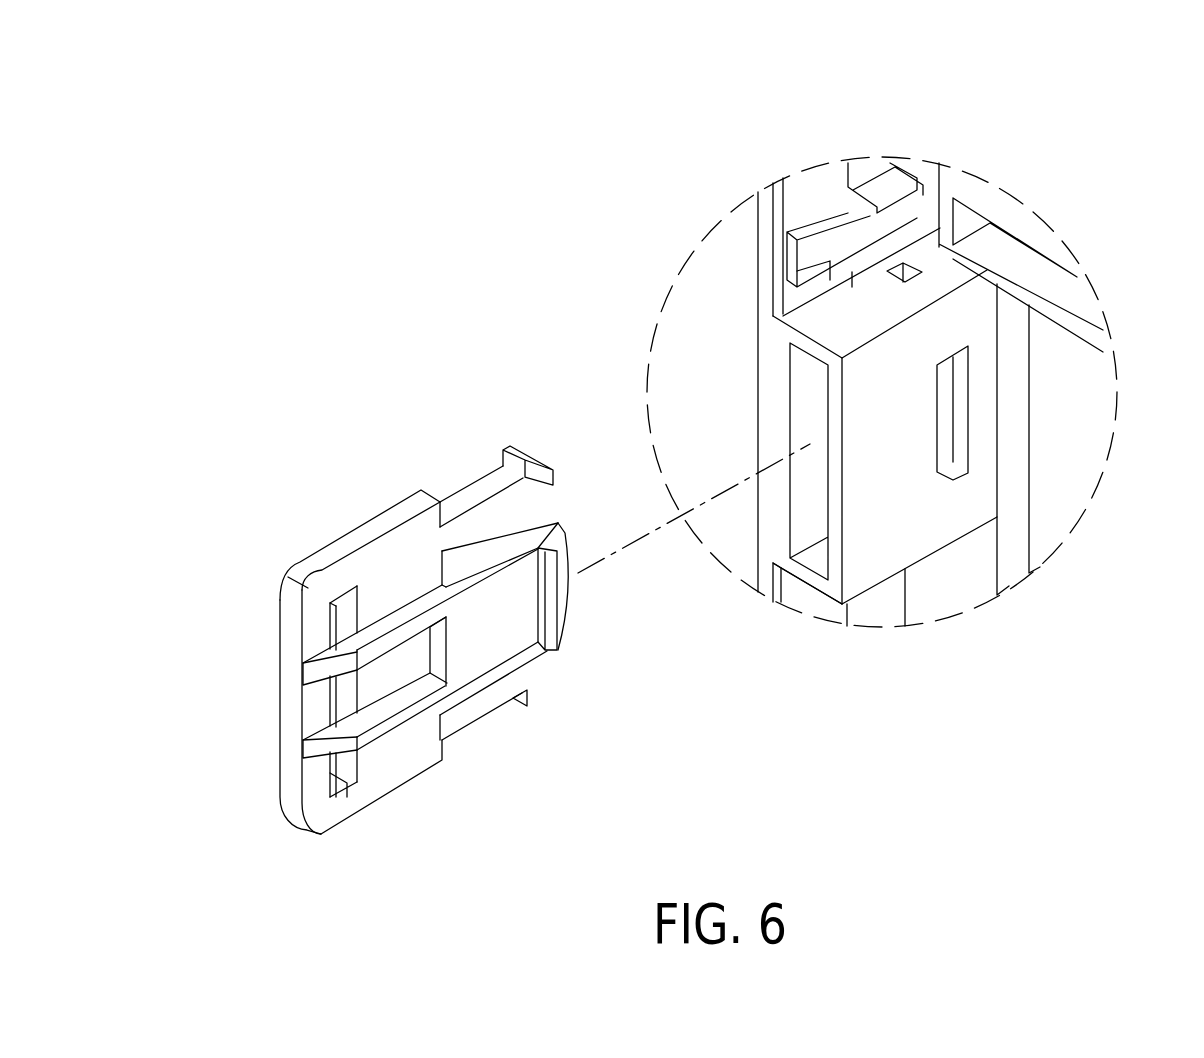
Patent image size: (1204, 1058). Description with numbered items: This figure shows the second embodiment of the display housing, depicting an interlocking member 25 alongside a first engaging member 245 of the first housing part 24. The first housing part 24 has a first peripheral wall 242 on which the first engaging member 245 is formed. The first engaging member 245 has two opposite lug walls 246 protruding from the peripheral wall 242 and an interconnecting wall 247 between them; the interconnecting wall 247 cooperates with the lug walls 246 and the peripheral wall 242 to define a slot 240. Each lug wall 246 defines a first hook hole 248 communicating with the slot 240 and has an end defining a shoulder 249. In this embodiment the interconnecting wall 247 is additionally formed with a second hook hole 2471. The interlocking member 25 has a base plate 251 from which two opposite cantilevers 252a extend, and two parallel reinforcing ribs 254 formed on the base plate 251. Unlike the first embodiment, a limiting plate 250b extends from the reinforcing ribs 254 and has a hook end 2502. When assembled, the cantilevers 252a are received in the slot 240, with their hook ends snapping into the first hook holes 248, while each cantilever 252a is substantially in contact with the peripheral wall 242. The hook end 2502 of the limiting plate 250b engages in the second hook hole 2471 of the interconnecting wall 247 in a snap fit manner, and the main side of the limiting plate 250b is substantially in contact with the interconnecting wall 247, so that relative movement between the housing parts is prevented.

The interlocking member 25 is at (394, 468).
The base plate 251 is at (346, 544).
The cantilevers 252a is at (481, 514).
The reinforcing ribs 254 is at (333, 735).
The limiting plate 250b is at (502, 637).
The hook end 2502 is at (559, 612).
The first housing part 24 is at (740, 350).
The slot 240 is at (810, 420).
The first peripheral wall 242 is at (758, 455).
The first engaging member 245 is at (925, 250).
The lug walls 246 is at (823, 330).
The interconnecting wall 247 is at (833, 480).
The second hook hole 2471 is at (947, 420).
The first hook hole 248 is at (903, 252).
The shoulder 249 is at (810, 577).